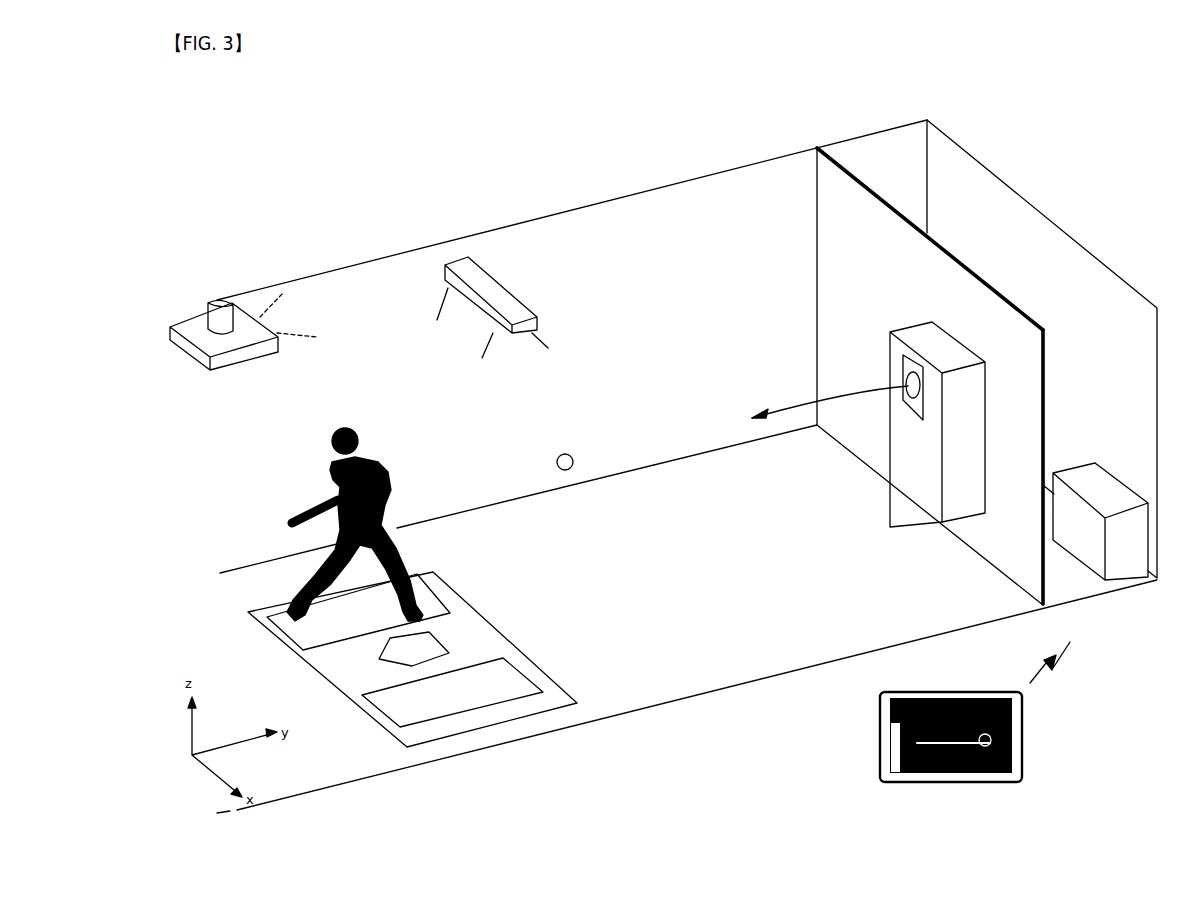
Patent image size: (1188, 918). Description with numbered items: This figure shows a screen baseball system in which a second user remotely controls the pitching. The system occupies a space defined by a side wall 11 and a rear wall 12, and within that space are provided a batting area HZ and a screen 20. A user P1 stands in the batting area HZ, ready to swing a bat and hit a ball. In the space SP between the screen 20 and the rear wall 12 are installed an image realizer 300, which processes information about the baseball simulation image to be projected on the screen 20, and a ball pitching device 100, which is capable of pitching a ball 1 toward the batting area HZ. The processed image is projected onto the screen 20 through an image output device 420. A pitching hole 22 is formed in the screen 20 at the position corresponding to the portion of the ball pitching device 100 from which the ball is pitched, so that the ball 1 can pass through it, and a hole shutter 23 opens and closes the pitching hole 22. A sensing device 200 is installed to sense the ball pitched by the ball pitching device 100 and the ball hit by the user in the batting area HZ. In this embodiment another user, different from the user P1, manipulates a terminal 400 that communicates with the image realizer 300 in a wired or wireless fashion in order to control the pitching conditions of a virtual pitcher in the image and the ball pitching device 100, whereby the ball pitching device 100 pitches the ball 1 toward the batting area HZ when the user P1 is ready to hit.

The side wall 11 is at (586, 206).
The rear wall 12 is at (1055, 224).
The screen 20 is at (900, 210).
The space SP is at (1066, 359).
The sensing device 200 is at (500, 288).
The image output device 420 is at (238, 358).
The ball pitching device 100 is at (890, 447).
The pitching hole 22 is at (906, 382).
The hole shutter 23 is at (905, 397).
The ball 1 is at (559, 453).
The user P1 is at (366, 455).
The batting area HZ is at (489, 634).
The image realizer 300 is at (1120, 557).
The terminal 400 is at (880, 730).